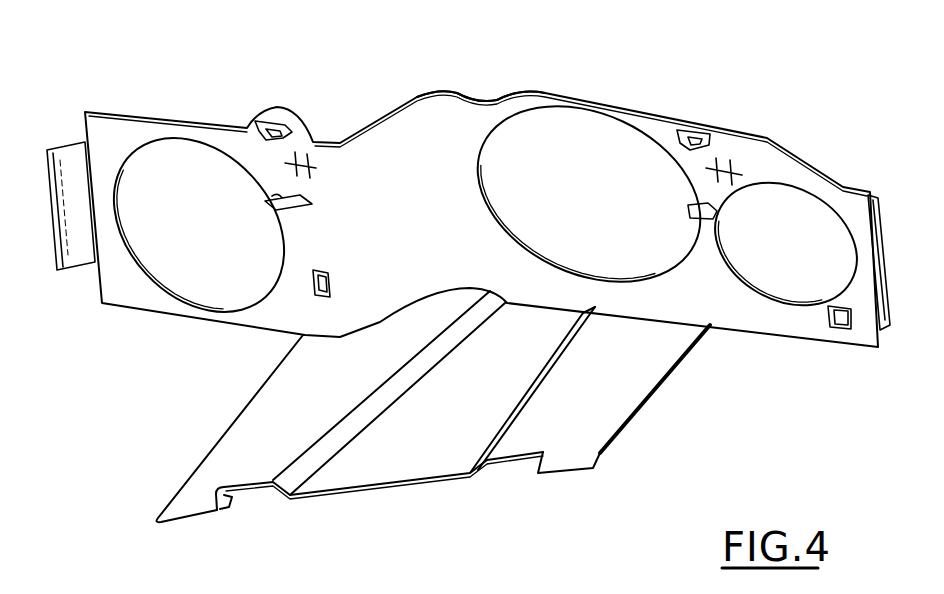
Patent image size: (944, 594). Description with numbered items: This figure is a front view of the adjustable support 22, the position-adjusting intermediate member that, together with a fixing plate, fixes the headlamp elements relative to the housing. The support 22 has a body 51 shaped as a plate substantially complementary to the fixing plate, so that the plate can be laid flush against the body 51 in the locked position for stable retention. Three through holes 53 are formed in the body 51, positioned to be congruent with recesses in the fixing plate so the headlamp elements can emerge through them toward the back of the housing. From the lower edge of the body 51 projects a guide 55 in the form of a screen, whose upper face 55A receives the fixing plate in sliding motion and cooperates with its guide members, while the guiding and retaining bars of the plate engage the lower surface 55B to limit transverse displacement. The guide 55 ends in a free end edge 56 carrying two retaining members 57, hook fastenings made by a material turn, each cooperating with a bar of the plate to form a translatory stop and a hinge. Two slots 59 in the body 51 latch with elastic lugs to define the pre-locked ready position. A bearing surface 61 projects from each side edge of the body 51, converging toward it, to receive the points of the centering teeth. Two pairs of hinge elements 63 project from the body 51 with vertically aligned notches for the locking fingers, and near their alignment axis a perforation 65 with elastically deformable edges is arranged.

The adjustable support 22 is at (758, 107).
The body 51 is at (450, 100).
The through holes 53 is at (479, 209).
The guide 55 is at (413, 481).
The upper face of the guide 55A is at (665, 375).
The lower surface of the guide 55B is at (345, 496).
The free end edge 56 is at (287, 497).
The retaining members 57 is at (156, 507).
The slots 59 is at (328, 278).
The bearing surface 61 is at (72, 152).
The hinge elements 63 is at (272, 122).
The perforation 65 is at (316, 168).